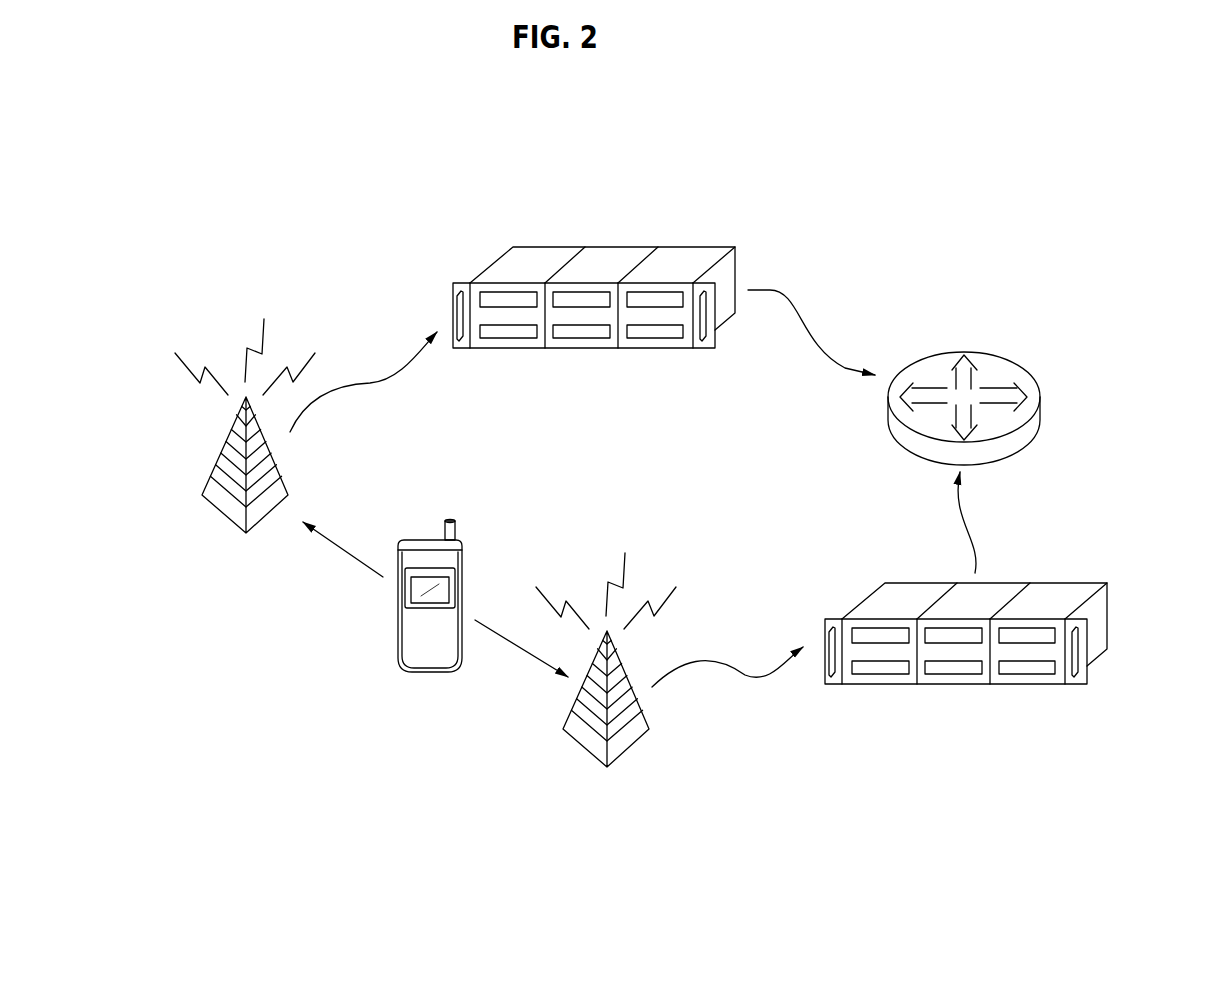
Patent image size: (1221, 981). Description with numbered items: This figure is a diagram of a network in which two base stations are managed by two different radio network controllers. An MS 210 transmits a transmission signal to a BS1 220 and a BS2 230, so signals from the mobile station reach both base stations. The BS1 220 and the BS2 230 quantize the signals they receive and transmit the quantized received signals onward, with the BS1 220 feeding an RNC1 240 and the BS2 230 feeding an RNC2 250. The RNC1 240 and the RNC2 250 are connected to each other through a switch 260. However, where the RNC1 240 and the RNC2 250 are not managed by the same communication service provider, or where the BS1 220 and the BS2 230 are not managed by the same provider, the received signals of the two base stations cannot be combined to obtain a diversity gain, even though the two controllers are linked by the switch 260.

The MS 210 is at (428, 540).
The BS1 220 is at (215, 508).
The BS2 230 is at (577, 743).
The RNC1 240 is at (513, 246).
The RNC2 250 is at (1107, 583).
The switch 260 is at (1040, 397).